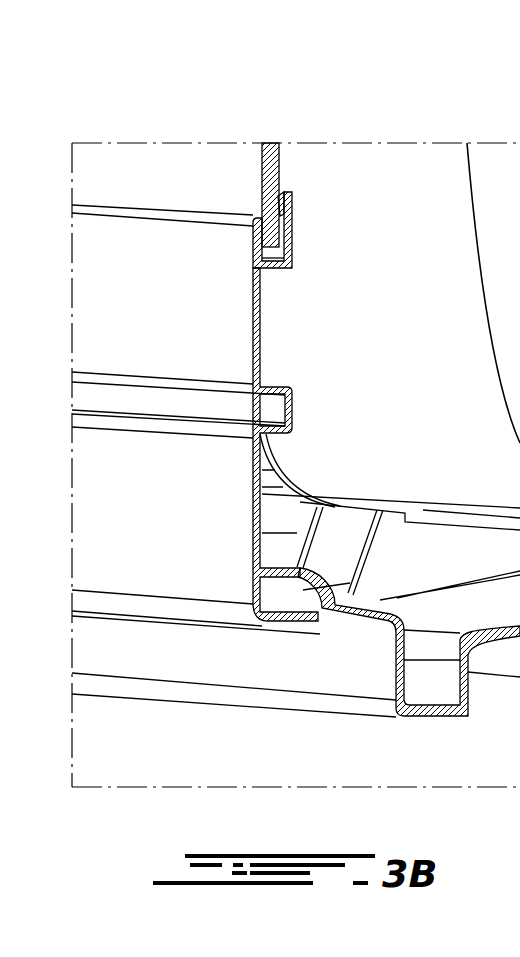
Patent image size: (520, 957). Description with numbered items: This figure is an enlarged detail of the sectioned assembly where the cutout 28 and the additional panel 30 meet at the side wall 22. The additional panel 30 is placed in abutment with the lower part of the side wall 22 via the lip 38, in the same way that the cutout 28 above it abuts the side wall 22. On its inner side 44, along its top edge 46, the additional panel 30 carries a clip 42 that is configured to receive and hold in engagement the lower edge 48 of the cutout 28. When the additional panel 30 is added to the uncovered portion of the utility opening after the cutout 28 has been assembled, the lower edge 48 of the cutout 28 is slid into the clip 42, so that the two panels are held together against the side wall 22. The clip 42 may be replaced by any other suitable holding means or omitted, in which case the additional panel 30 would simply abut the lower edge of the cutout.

The side wall 22 is at (342, 670).
The cutout 28 is at (236, 172).
The additional panel 30 is at (178, 567).
The lip 38 is at (303, 592).
The clip 42 is at (292, 245).
The inner side 44 is at (260, 333).
The top edge 46 is at (168, 235).
The lower edge 48 is at (279, 162).